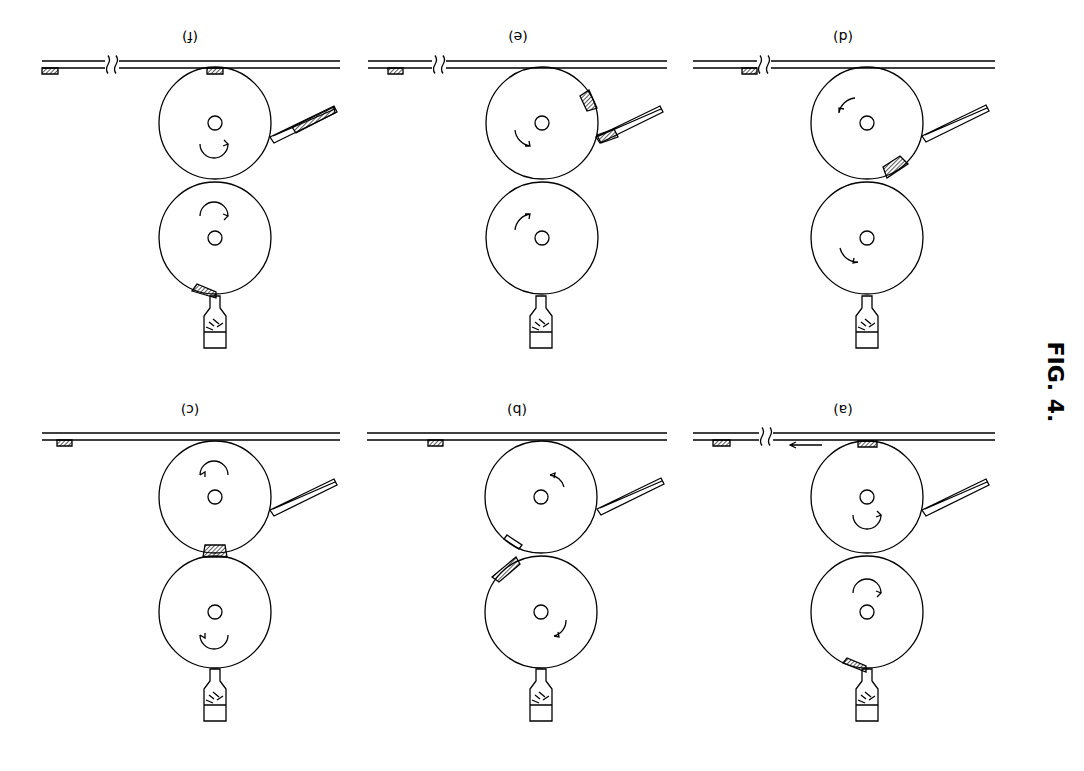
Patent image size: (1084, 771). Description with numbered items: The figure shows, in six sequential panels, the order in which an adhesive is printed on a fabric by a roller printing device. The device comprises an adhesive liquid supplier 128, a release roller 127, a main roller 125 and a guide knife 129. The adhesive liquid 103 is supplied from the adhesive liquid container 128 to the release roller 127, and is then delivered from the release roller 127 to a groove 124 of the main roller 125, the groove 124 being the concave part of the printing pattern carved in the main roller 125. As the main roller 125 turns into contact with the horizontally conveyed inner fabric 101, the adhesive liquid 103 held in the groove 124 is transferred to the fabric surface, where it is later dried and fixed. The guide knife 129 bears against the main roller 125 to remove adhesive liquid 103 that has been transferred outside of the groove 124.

The inner fabric 101 is at (393, 451).
The adhesive liquid 103 is at (432, 445).
The groove 124 is at (505, 543).
The main roller 125 is at (588, 529).
The release roller 127 is at (578, 656).
The adhesive liquid supplier 128 is at (530, 706).
The guide knife 129 is at (629, 503).